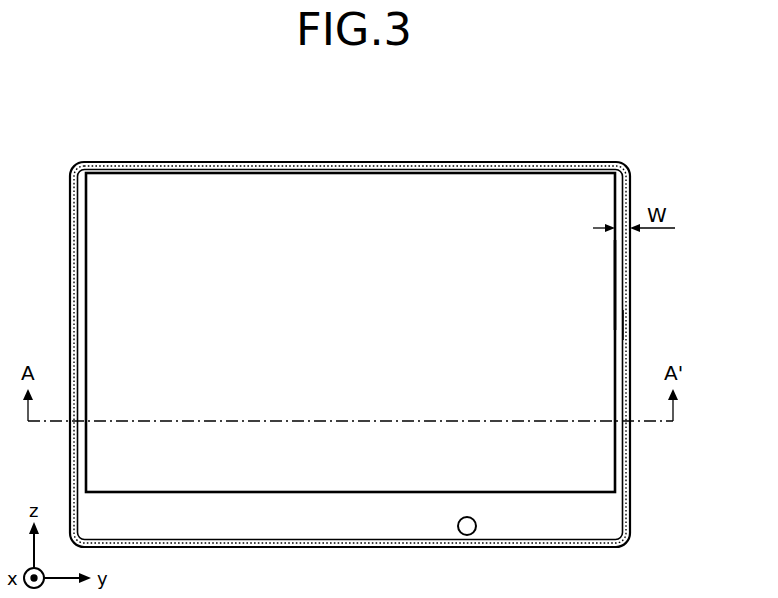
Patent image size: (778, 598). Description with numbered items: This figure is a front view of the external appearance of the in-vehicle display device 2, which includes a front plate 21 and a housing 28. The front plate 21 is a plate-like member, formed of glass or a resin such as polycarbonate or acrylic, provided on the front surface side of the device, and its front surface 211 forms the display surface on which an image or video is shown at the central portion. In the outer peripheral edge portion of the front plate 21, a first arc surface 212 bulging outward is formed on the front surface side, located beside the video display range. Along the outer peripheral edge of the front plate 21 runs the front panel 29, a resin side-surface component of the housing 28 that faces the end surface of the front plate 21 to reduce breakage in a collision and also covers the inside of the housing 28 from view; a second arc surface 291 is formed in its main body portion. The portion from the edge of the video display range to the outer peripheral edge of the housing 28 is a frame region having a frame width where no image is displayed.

The in-vehicle display device 2 is at (383, 315).
The housing 28 is at (626, 165).
The front plate 21 is at (598, 265).
The front surface 211 is at (596, 297).
The first arc surface 212 is at (618, 325).
The front panel 29 is at (625, 445).
The second arc surface 291 is at (626, 475).